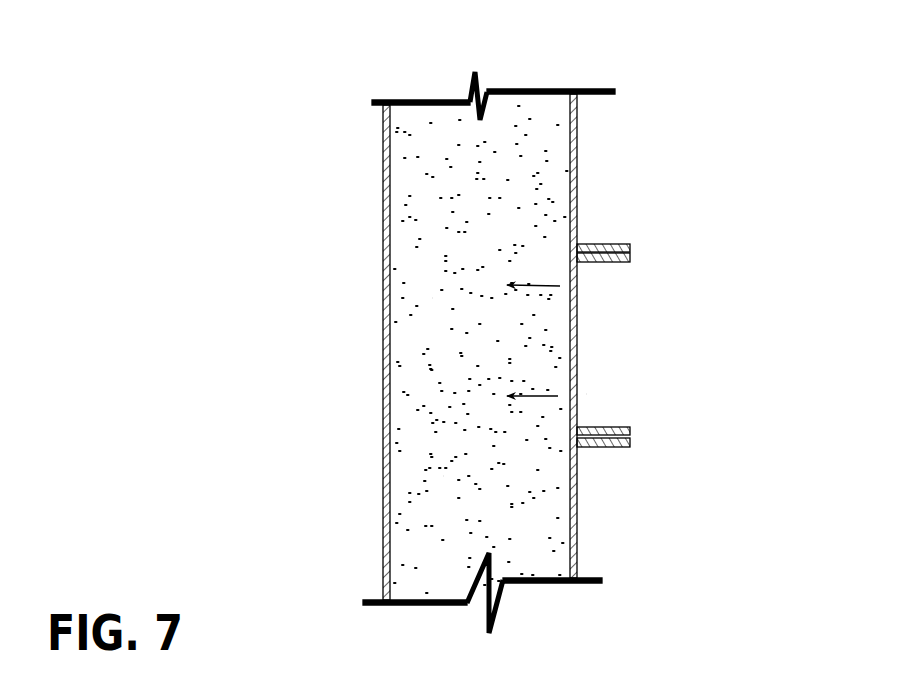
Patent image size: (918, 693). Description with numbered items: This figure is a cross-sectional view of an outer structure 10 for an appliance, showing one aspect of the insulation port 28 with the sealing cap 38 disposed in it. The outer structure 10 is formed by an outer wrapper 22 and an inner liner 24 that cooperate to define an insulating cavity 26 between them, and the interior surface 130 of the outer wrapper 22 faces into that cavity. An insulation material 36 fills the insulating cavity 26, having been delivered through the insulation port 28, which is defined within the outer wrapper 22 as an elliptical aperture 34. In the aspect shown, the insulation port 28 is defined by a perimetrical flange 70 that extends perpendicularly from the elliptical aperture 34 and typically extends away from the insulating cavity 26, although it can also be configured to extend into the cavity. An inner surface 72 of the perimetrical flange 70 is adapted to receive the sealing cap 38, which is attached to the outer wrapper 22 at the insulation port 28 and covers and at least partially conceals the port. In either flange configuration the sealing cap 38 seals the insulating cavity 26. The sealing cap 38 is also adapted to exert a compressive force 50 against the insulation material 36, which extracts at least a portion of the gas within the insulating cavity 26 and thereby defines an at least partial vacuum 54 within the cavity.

The outer structure 10 is at (352, 238).
The outer wrapper 22 is at (577, 130).
The inner liner 24 is at (383, 413).
The insulating cavity 26 is at (431, 138).
The insulation port 28 is at (623, 238).
The elliptical aperture 34 is at (617, 262).
The insulation material 36 is at (432, 298).
The sealing cap 38 is at (590, 391).
The compressive force 50 is at (530, 290).
The partial vacuum 54 is at (441, 477).
The perimetrical flange 70 is at (607, 447).
The inner surface 72 is at (617, 428).
The interior surface 130 is at (570, 155).